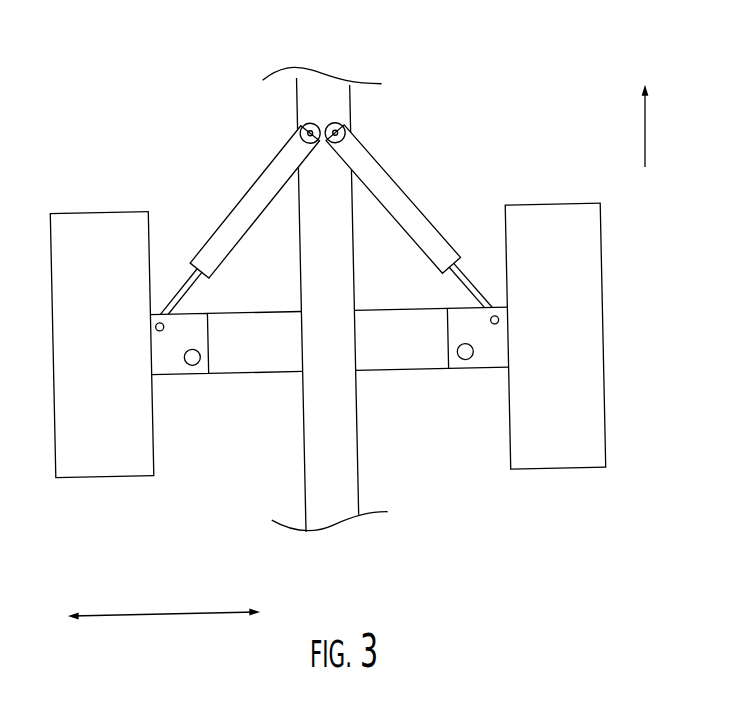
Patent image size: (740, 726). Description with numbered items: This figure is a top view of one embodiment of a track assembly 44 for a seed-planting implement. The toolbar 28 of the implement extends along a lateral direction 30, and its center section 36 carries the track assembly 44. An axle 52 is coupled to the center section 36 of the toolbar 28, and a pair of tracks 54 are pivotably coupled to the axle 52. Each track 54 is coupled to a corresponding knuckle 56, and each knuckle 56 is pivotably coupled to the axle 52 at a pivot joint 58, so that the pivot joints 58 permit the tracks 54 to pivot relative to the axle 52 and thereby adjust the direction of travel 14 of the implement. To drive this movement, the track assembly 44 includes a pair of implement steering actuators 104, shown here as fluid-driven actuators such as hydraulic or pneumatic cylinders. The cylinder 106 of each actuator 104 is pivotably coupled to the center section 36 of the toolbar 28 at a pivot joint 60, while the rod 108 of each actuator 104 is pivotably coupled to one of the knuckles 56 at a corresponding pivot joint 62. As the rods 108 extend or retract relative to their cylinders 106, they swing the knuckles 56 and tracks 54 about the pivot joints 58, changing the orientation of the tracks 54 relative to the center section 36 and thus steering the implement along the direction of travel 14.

The direction of travel 14 is at (645, 122).
The toolbar 28 is at (345, 545).
The lateral direction 30 is at (173, 615).
The center section 36 is at (296, 103).
The track assembly 44 is at (108, 95).
The axle 52 is at (382, 310).
The track 54 is at (93, 467).
The knuckle 56 is at (172, 375).
The pivot joint 58 is at (194, 365).
The pivot joint 60 is at (312, 124).
The pivot joint 62 is at (156, 327).
The implement steering actuator 104 is at (324, 218).
The cylinder 106 is at (270, 162).
The rod 108 is at (181, 285).